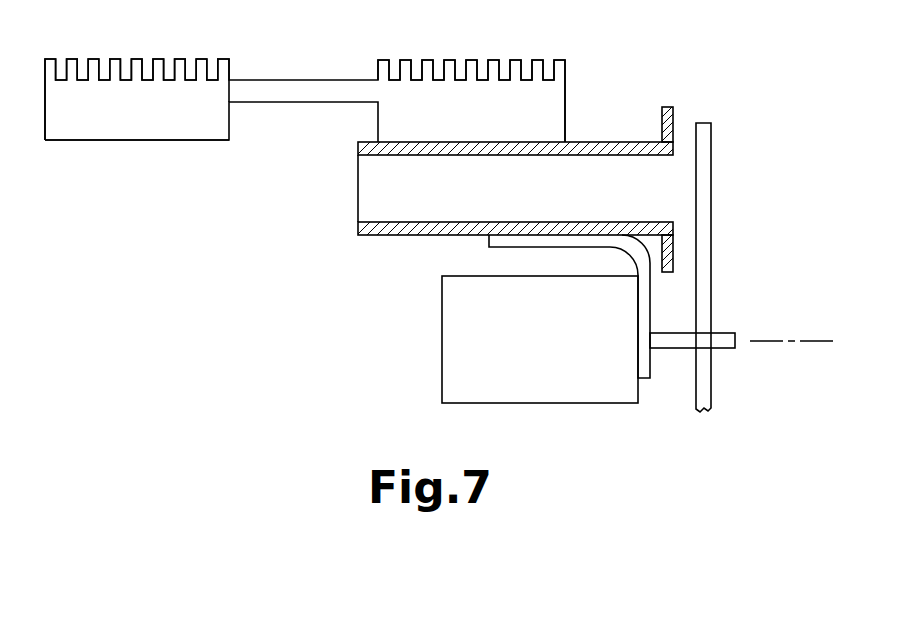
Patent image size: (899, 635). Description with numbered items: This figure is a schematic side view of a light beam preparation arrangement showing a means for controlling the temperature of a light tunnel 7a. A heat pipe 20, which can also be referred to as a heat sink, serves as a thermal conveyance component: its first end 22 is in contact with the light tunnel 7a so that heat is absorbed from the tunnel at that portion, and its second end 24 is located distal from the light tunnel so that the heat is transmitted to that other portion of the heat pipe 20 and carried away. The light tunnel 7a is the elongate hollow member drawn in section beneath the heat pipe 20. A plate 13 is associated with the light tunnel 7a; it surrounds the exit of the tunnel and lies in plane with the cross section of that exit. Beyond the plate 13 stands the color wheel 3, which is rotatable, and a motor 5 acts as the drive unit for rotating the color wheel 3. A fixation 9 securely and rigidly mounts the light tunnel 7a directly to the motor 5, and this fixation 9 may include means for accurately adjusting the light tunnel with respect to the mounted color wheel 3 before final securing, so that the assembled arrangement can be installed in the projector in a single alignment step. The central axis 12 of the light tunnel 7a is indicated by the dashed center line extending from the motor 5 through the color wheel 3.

The heat pipe 20 is at (343, 58).
The first end 22 is at (553, 102).
The second end 24 is at (62, 128).
The plate 13 is at (662, 120).
The color wheel 3 is at (703, 153).
The light tunnel 7a is at (372, 235).
The fixation 9 is at (645, 313).
The motor 5 is at (452, 380).
The axis 12 is at (765, 340).